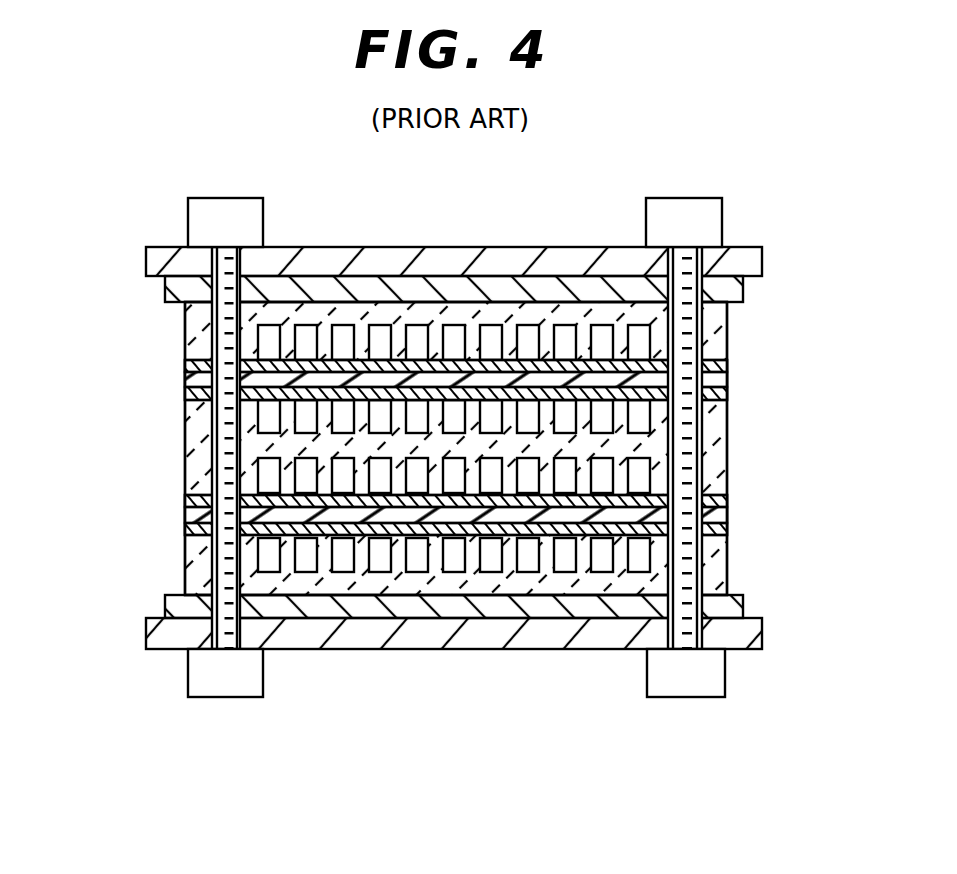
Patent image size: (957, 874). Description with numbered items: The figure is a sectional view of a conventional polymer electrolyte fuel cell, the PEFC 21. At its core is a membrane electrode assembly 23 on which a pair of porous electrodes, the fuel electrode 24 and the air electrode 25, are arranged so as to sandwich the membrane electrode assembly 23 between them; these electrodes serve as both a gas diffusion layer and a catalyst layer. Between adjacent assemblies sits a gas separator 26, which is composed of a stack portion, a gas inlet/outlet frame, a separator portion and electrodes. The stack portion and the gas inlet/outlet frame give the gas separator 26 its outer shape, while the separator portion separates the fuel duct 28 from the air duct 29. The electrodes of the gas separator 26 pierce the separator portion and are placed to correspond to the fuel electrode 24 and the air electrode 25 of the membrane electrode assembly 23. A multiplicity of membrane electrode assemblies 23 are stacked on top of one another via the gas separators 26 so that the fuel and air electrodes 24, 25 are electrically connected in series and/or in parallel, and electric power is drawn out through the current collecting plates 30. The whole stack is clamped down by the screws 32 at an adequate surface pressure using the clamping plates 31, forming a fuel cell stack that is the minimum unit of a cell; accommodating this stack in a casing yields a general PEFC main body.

The PEFC 21 is at (120, 252).
The membrane electrode assembly 23 is at (484, 450).
The fuel electrode 24 is at (648, 368).
The air electrode 25 is at (662, 403).
The gas separator 26 is at (547, 320).
The fuel duct 28 is at (270, 337).
The air duct 29 is at (270, 418).
The current collecting plates 30 is at (735, 290).
The clamping plates 31 is at (733, 262).
The screws 32 is at (222, 217).